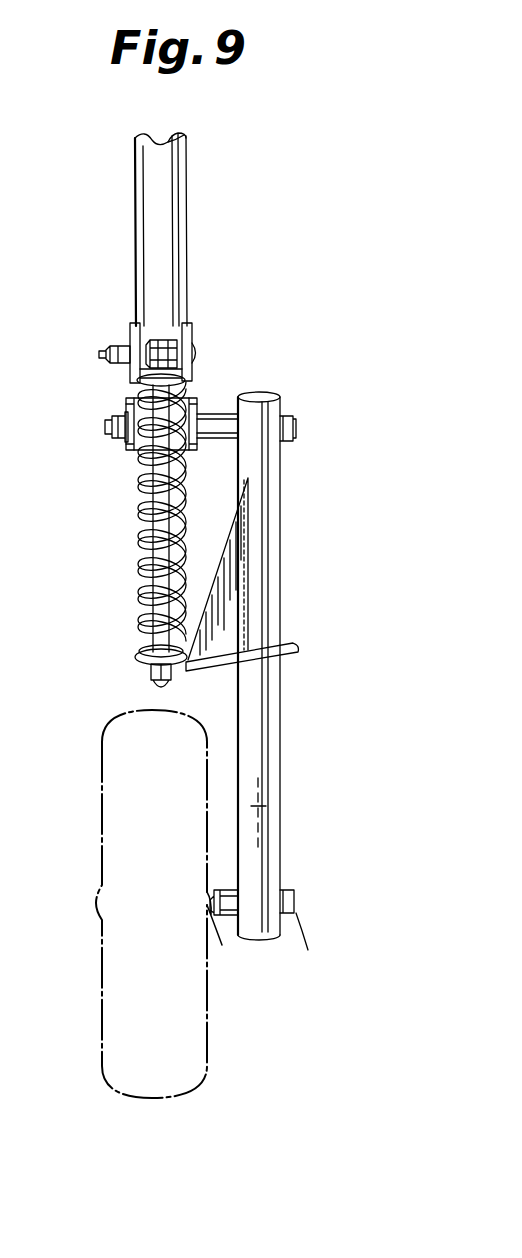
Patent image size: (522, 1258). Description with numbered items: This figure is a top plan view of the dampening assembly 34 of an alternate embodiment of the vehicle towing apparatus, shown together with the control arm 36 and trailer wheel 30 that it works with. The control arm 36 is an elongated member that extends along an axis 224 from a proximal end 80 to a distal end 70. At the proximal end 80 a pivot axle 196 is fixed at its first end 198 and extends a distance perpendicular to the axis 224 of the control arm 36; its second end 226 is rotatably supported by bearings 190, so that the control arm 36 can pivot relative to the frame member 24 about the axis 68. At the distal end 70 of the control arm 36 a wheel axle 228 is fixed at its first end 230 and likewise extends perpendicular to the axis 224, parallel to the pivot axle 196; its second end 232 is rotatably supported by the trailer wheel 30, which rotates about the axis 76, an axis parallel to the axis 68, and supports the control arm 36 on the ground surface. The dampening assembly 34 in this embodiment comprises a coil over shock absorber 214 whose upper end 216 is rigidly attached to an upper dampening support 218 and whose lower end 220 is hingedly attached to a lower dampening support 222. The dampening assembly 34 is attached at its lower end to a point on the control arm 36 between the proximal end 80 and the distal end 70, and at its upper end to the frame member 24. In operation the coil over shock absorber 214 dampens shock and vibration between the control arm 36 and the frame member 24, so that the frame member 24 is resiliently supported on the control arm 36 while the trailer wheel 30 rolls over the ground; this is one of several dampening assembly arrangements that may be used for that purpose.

The frame member 24 is at (214, 211).
The lower end 220 is at (197, 342).
The lower dampening support 222 is at (193, 370).
The pivot axle 196 is at (218, 427).
The proximal end 80 is at (264, 406).
The first end 198 is at (291, 424).
The axis 68 is at (296, 428).
The bearings 190 is at (125, 402).
The second end 226 is at (105, 428).
The dampening assembly 34 is at (94, 513).
The coil over shock absorber 214 is at (132, 583).
The upper end 216 is at (130, 663).
The upper dampening support 218 is at (234, 622).
The control arm 36 is at (320, 683).
The trailer wheel 30 is at (110, 779).
The second end 232 is at (96, 903).
The axis 224 is at (286, 812).
The wheel axle 228 is at (226, 922).
The distal end 70 is at (262, 935).
The first end 230 is at (296, 918).
The axis 76 is at (298, 903).